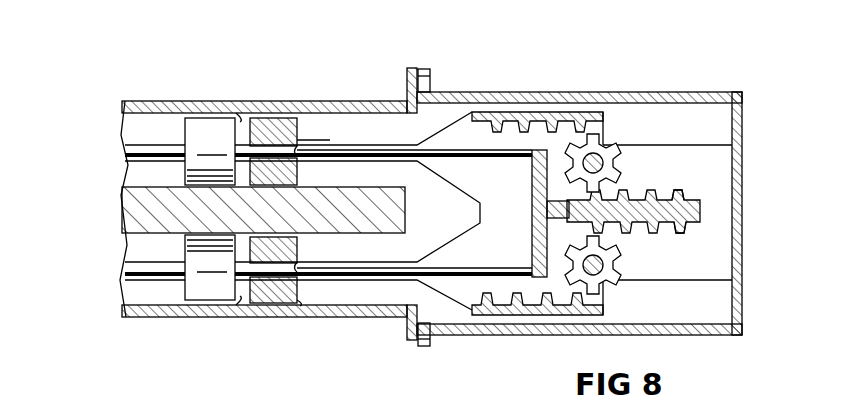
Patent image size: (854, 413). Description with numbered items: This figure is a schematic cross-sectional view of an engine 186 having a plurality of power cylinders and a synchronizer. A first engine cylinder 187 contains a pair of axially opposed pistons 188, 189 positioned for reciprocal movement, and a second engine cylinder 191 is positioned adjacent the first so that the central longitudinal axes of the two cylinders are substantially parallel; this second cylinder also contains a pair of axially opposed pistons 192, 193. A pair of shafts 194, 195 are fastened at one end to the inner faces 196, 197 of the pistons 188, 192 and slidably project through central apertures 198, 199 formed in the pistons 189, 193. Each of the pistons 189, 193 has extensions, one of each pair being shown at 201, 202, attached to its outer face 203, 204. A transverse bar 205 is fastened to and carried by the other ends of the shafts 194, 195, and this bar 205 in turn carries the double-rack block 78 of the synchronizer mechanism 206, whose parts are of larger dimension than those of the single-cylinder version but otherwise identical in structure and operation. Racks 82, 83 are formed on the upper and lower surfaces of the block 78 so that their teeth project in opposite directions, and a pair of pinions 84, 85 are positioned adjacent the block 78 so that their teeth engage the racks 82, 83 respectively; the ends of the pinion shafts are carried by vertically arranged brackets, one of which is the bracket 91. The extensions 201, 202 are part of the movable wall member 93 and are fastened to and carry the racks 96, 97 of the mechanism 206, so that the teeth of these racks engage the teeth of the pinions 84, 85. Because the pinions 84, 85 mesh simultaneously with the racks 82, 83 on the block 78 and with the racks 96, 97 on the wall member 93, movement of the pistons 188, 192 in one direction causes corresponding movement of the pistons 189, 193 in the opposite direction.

The engine 186 is at (94, 70).
The first engine cylinder 187 is at (184, 84).
The piston 188 is at (185, 132).
The piston 189 is at (285, 118).
The second engine cylinder 191 is at (160, 328).
The piston 192 is at (185, 244).
The piston 193 is at (270, 300).
The shaft 194 is at (440, 152).
The shaft 195 is at (365, 280).
The inner face 196 is at (240, 116).
The inner face 197 is at (238, 306).
The central aperture 198 is at (297, 148).
The central aperture 199 is at (297, 258).
The extension 201 is at (388, 145).
The extension 202 is at (372, 282).
The outer face 203 is at (305, 140).
The outer face 204 is at (300, 306).
The transverse bar 205 is at (542, 226).
The synchronizer mechanism 206 is at (676, 112).
The rack 96 is at (548, 112).
The rack 97 is at (535, 313).
The pinion 84 is at (622, 172).
The pinion 85 is at (607, 290).
The rack 82 is at (690, 190).
The rack 83 is at (688, 234).
The double-rack block 78 is at (700, 210).
The bracket 91 is at (715, 282).
The movable wall member 93 is at (421, 325).